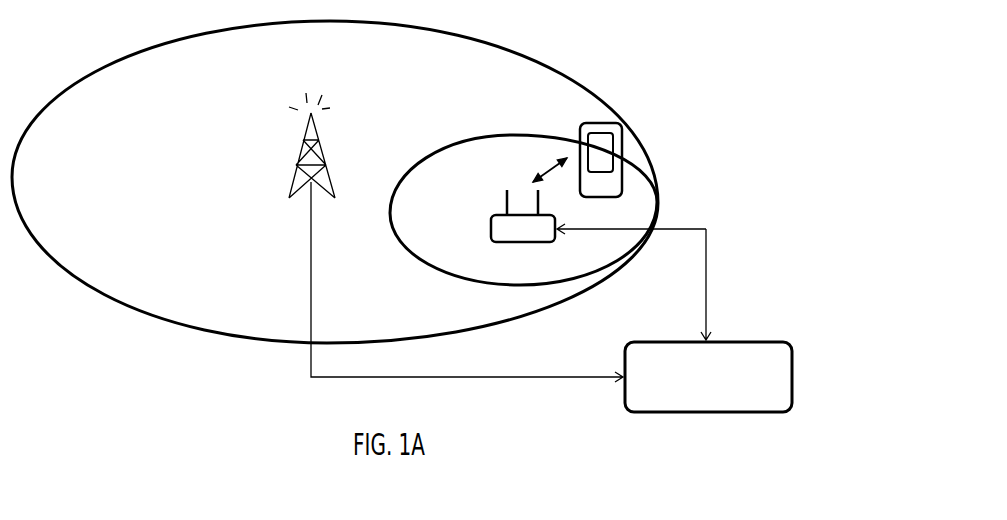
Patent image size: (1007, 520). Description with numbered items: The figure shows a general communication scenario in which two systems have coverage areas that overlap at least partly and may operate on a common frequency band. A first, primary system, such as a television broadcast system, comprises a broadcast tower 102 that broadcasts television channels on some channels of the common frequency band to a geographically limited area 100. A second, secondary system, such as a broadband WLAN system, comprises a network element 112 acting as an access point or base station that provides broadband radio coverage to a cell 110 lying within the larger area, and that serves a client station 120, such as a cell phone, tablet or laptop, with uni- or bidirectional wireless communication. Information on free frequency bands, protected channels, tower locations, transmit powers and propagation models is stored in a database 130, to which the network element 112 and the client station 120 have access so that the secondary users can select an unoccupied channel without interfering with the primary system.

The geographically limited area 100 is at (578, 72).
The broadcast tower 102 is at (303, 140).
The cell 110 is at (462, 272).
The network element 112 is at (488, 222).
The client station 120 is at (622, 133).
The database 130 is at (708, 377).